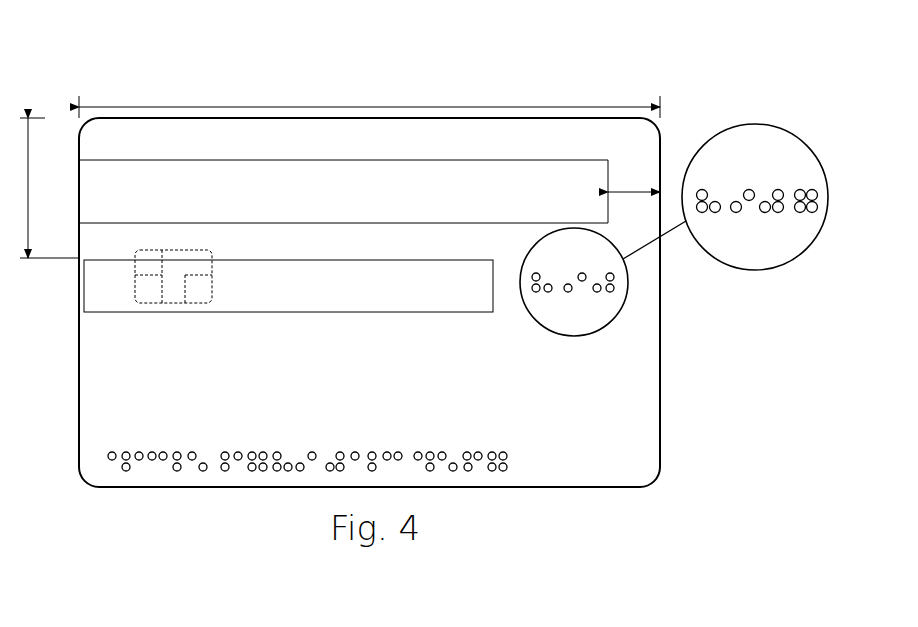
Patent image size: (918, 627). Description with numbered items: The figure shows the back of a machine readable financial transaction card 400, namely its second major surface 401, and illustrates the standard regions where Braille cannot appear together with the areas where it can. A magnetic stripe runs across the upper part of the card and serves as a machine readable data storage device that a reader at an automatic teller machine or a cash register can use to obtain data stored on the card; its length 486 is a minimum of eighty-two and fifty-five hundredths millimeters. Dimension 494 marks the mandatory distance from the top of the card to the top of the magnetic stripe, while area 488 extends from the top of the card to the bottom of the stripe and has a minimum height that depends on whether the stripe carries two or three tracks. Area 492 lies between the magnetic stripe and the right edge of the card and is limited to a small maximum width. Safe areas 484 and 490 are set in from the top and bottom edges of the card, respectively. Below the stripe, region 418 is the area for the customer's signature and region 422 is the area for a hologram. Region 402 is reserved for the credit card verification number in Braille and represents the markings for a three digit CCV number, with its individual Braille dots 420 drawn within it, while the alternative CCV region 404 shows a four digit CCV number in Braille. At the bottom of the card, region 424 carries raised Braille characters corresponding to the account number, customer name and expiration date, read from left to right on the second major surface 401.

The financial transaction card 400 is at (527, 76).
The second major surface 401 is at (631, 370).
The CCV Braille region 402 is at (614, 263).
The alternative CCV region 404 is at (763, 125).
The signature region 418 is at (306, 160).
The braille dots 420 is at (615, 277).
The hologram region 422 is at (434, 262).
The Braille character region 424 is at (177, 472).
The safe area 484 is at (68, 134).
The magnetic stripe length 486 is at (369, 106).
The magnetic stripe area 488 is at (29, 183).
The safe area 490 is at (68, 472).
The stripe-to-edge area 492 is at (636, 190).
The top-to-stripe dimension 494 is at (679, 134).